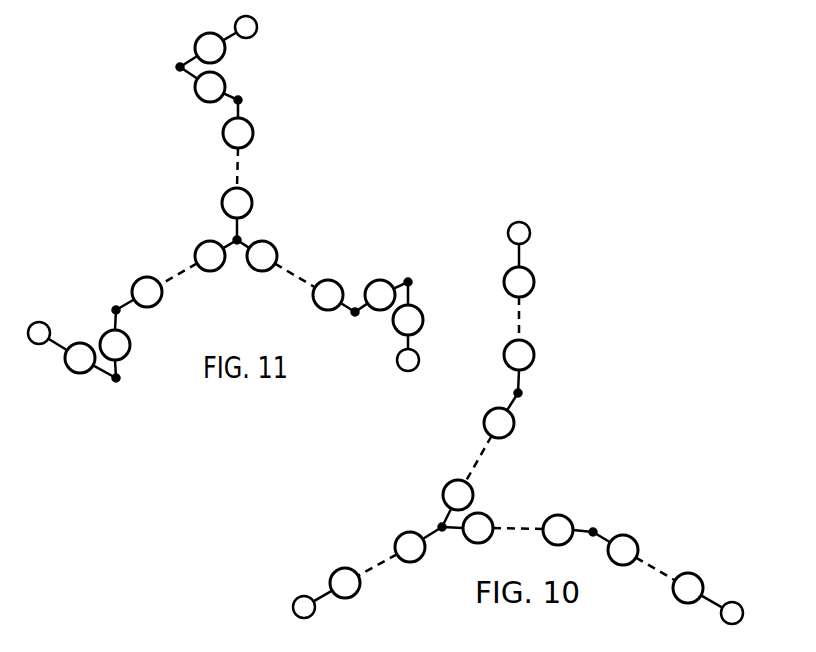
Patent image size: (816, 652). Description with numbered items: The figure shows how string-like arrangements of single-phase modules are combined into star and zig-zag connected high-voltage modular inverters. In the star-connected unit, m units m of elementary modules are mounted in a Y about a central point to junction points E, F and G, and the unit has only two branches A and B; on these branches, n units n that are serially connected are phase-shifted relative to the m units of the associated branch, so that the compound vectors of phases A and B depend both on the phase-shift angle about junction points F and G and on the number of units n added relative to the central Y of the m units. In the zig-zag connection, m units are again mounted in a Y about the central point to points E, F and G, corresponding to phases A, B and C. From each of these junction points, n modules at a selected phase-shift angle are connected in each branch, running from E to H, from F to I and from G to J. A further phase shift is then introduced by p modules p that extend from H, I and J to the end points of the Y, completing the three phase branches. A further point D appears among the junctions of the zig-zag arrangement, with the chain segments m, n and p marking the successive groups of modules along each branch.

In FIG. 10, the branch A is at (519, 244).
In FIG. 11, the branch A is at (240, 28).
In FIG. 10, the branch B is at (722, 609).
In FIG. 11, the branch B is at (408, 353).
In FIG. 10, the phase C is at (312, 604).
In FIG. 11, the phase C is at (47, 336).
In FIG. 11, the junction point D is at (237, 240).
In FIG. 10, the junction point E is at (442, 527).
In FIG. 11, the junction point E is at (238, 100).
In FIG. 10, the junction point F is at (518, 393).
In FIG. 11, the junction point F is at (355, 312).
In FIG. 10, the junction point G is at (593, 532).
In FIG. 11, the junction point G is at (116, 310).
In FIG. 11, the point H is at (180, 67).
In FIG. 11, the point I is at (408, 282).
In FIG. 11, the point J is at (116, 378).
In FIG. 10, the m units m is at (459, 455).
In FIG. 11, the m units m is at (279, 171).
In FIG. 10, the n units n is at (556, 323).
In FIG. 11, the n units n is at (188, 120).
In FIG. 11, the p modules p is at (201, 18).